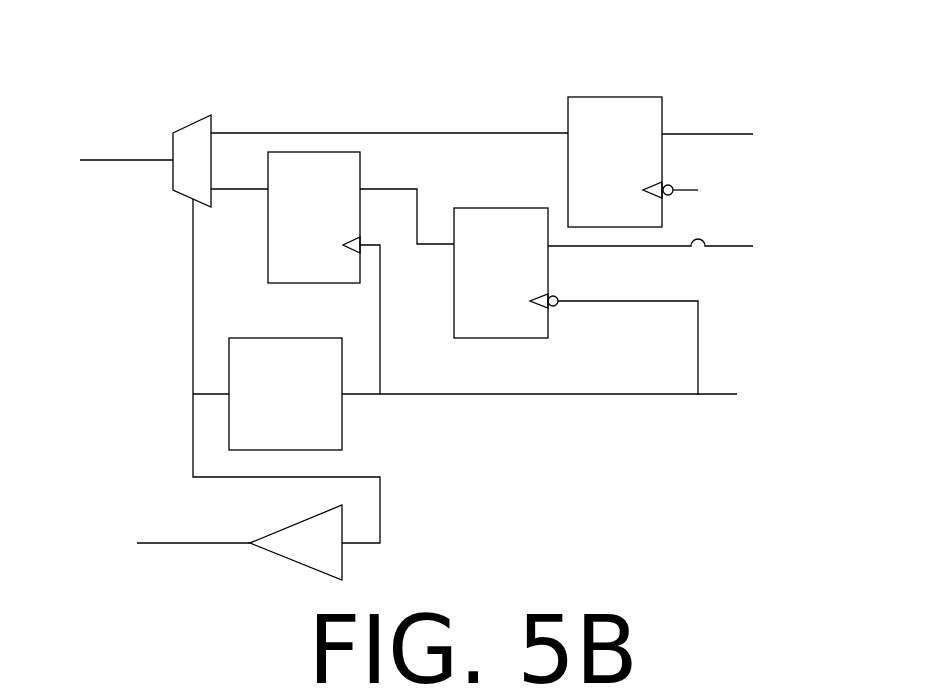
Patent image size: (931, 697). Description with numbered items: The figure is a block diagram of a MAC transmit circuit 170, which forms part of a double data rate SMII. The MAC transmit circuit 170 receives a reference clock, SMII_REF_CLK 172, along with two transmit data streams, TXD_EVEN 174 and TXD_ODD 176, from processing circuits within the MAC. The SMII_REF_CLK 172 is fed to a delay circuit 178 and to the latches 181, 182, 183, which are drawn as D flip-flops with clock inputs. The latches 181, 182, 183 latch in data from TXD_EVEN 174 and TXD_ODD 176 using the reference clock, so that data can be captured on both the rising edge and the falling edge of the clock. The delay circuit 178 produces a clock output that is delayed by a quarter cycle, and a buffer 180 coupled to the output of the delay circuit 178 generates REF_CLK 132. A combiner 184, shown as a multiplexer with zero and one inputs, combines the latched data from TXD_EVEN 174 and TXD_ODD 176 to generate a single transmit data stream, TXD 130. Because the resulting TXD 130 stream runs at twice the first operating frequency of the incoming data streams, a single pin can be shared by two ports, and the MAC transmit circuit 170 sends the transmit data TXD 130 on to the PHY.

The TXD 130 is at (63, 115).
The REF_CLK 132 is at (64, 492).
The MAC transmit circuit 170 is at (440, 62).
The SMII_REF_CLK 172 is at (784, 408).
The TXD_EVEN 174 is at (783, 85).
The TXD_ODD 176 is at (795, 258).
The delay circuit 178 is at (287, 338).
The buffer 180 is at (287, 562).
The latch 181 is at (615, 97).
The latch 182 is at (268, 217).
The latch 183 is at (500, 208).
The combiner 184 is at (193, 120).